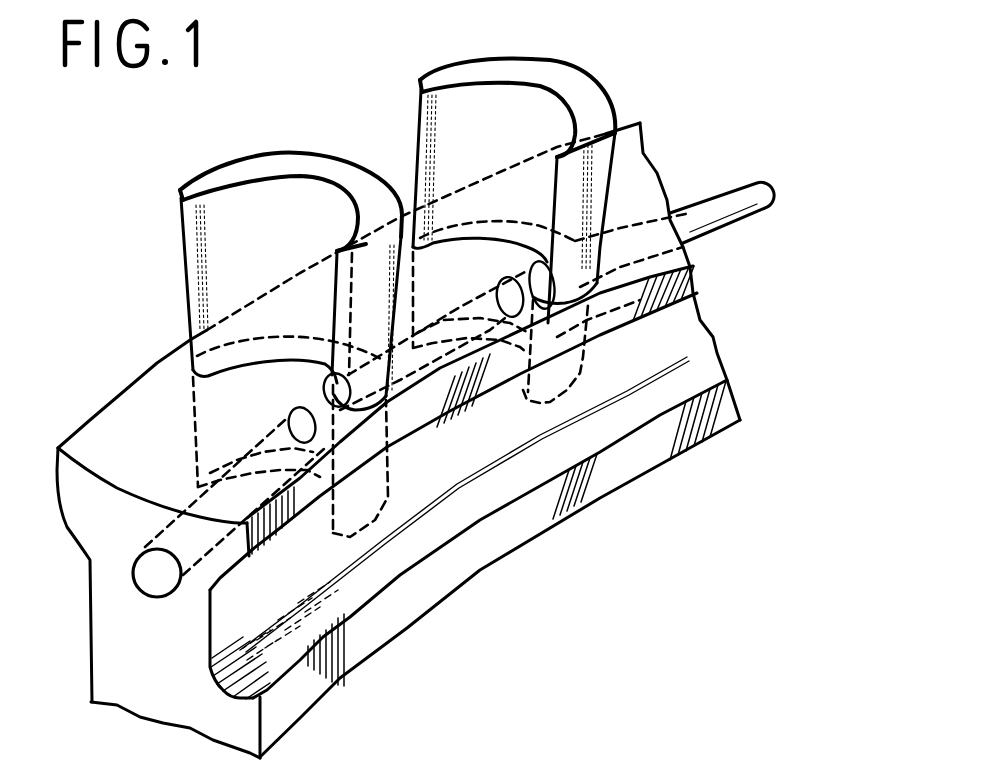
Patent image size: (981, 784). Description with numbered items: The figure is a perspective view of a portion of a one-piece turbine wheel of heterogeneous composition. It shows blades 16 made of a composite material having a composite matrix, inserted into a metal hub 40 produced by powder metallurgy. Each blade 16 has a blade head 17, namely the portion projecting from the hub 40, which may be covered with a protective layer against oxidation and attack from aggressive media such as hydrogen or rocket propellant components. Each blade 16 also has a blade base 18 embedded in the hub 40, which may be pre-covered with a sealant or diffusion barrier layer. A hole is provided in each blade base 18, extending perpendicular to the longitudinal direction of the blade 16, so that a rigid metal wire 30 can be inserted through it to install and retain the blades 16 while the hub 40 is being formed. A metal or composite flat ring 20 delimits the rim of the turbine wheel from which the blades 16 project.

The blade 16 is at (335, 145).
The blade head 17 is at (240, 218).
The blade base 18 is at (385, 525).
The flat ring 20 is at (93, 530).
The rigid metal wire 30 is at (147, 580).
The hub 40 is at (528, 518).